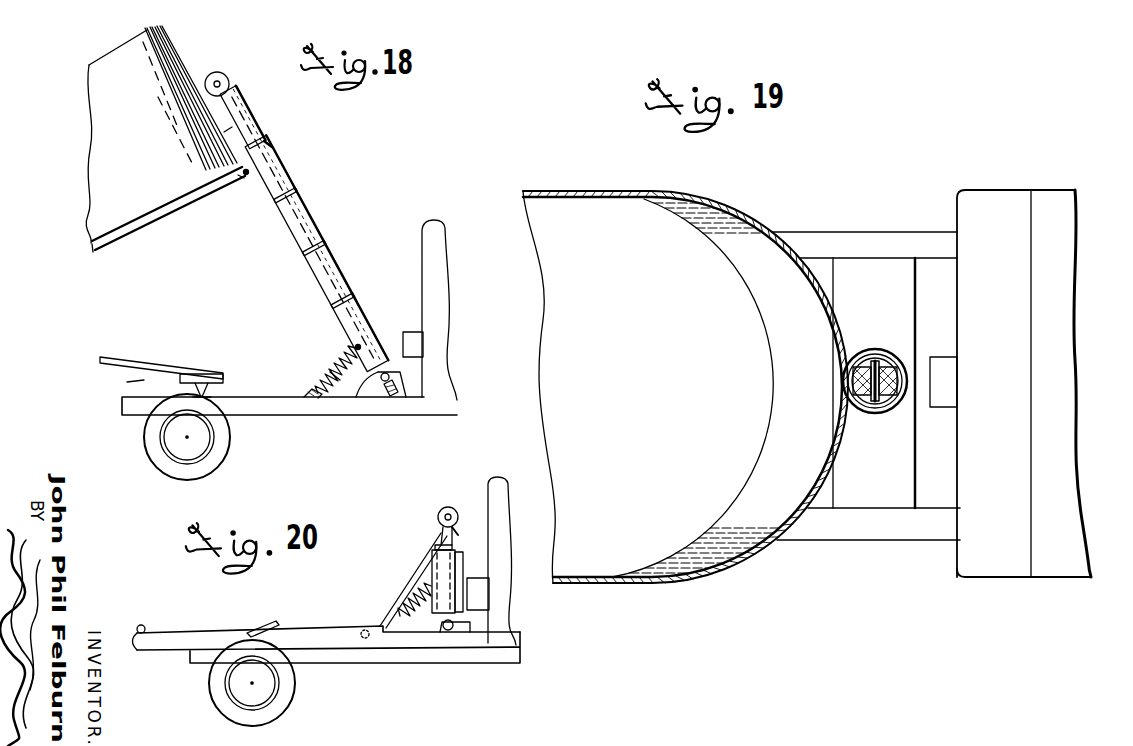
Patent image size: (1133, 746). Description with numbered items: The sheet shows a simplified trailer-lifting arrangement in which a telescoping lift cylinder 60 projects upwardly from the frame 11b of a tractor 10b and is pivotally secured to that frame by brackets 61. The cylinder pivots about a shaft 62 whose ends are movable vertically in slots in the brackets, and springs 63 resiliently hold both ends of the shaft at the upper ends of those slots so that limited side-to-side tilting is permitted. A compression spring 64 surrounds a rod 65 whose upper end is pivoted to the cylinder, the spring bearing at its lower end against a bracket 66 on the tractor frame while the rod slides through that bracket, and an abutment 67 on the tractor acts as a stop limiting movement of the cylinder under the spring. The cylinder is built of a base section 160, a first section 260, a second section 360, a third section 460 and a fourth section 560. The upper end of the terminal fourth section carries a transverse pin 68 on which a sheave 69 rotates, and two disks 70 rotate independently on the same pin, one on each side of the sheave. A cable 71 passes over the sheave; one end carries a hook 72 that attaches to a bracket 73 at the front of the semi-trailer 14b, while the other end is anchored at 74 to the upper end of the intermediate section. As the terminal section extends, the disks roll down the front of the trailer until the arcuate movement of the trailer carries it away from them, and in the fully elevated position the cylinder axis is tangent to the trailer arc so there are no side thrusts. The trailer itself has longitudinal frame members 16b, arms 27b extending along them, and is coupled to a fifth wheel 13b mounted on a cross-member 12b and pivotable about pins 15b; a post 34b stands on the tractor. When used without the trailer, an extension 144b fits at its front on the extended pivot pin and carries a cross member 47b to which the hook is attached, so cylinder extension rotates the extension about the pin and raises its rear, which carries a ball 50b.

In FIG. 18, the tractor 10b is at (298, 422).
In FIG. 20, the tractor 10b is at (410, 667).
In FIG. 19, the tractor 10b is at (997, 186).
In FIG. 18, the frame 11b is at (248, 420).
In FIG. 20, the frame 11b is at (330, 655).
In FIG. 19, the frame 11b is at (915, 240).
In FIG. 18, the cross-member 12b is at (218, 397).
In FIG. 19, the cross-member 12b is at (905, 503).
In FIG. 18, the fifth wheel 13b is at (118, 382).
In FIG. 20, the fifth wheel 13b is at (258, 630).
In FIG. 18, the semi-trailer 14b is at (92, 252).
In FIG. 19, the semi-trailer 14b is at (682, 586).
In FIG. 18, the pins 15b is at (205, 375).
In FIG. 18, the frame members 16b is at (143, 227).
In FIG. 18, the arms 27b is at (195, 372).
In FIG. 18, the post 34b is at (438, 242).
In FIG. 20, the post 34b is at (503, 522).
In FIG. 19, the post 34b is at (1060, 200).
In FIG. 20, the cross member 47b is at (362, 644).
In FIG. 20, the ball 50b is at (144, 626).
In FIG. 20, the extension 144b is at (301, 626).
In FIG. 18, the telescoping lift cylinder 60 is at (314, 218).
In FIG. 20, the telescoping lift cylinder 60 is at (452, 538).
In FIG. 19, the telescoping lift cylinder 60 is at (914, 384).
In FIG. 18, the brackets 61 is at (372, 388).
In FIG. 20, the brackets 61 is at (457, 634).
In FIG. 18, the shaft 62 is at (386, 382).
In FIG. 20, the shaft 62 is at (447, 632).
In FIG. 18, the springs 63 is at (402, 388).
In FIG. 18, the compression spring 64 is at (334, 362).
In FIG. 18, the rod 65 is at (324, 377).
In FIG. 18, the bracket 66 is at (304, 392).
In FIG. 18, the abutment 67 is at (413, 343).
In FIG. 20, the abutment 67 is at (487, 592).
In FIG. 19, the abutment 67 is at (953, 368).
In FIG. 18, the transverse pin 68 is at (220, 82).
In FIG. 20, the transverse pin 68 is at (437, 512).
In FIG. 19, the transverse pin 68 is at (876, 365).
In FIG. 19, the sheave 69 is at (855, 396).
In FIG. 18, the disks 70 is at (212, 80).
In FIG. 20, the disks 70 is at (447, 508).
In FIG. 19, the disks 70 is at (895, 353).
In FIG. 18, the cable 71 is at (230, 135).
In FIG. 20, the cable 71 is at (388, 606).
In FIG. 18, the hook 72 is at (250, 176).
In FIG. 18, the bracket 73 is at (244, 176).
In FIG. 18, the anchor 74 is at (270, 144).
In FIG. 20, the anchor 74 is at (459, 539).
In FIG. 18, the base section 160 is at (359, 332).
In FIG. 20, the base section 160 is at (462, 562).
In FIG. 19, the base section 160 is at (888, 413).
In FIG. 18, the first section 260 is at (328, 275).
In FIG. 20, the first section 260 is at (435, 560).
In FIG. 19, the first section 260 is at (880, 352).
In FIG. 18, the second section 360 is at (300, 222).
In FIG. 20, the second section 360 is at (438, 552).
In FIG. 19, the second section 360 is at (866, 356).
In FIG. 18, the third section 460 is at (271, 169).
In FIG. 20, the third section 460 is at (434, 537).
In FIG. 19, the third section 460 is at (895, 367).
In FIG. 18, the fourth section 560 is at (242, 117).
In FIG. 20, the fourth section 560 is at (440, 530).
In FIG. 19, the fourth section 560 is at (880, 414).